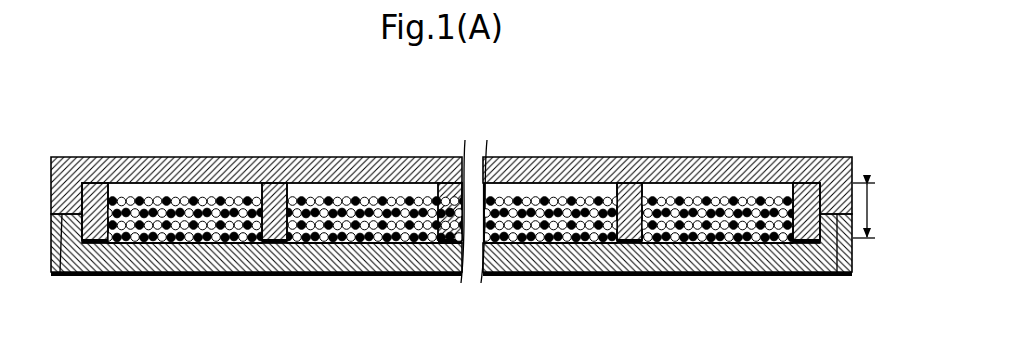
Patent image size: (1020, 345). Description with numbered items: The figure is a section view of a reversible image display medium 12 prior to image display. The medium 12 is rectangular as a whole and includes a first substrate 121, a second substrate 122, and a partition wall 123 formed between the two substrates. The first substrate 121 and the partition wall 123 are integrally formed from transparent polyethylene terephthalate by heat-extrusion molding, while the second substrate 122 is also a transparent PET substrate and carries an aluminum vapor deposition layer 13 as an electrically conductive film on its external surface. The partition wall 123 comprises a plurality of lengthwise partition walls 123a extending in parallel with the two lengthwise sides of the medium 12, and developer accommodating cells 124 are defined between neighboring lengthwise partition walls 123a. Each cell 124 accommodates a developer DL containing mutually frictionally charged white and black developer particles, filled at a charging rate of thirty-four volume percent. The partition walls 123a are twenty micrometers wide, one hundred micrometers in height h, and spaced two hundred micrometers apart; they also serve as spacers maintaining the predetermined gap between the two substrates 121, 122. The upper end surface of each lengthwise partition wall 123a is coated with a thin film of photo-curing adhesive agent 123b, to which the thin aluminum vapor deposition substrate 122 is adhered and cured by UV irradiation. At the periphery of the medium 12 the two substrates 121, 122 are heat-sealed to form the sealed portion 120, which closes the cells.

The reversible image display medium 12 is at (81, 72).
The aluminum vapor deposition layer 13 is at (211, 276).
The sealed portion 120 is at (60, 280).
The first substrate 121 is at (133, 156).
The second substrate 122 is at (136, 264).
The partition wall 123 is at (98, 197).
The lengthwise partition wall 123a is at (275, 197).
The photo-curing adhesive agent 123b is at (277, 246).
The developer accommodating cell 124 is at (180, 190).
The developer DL is at (217, 196).
The height of partition wall h is at (869, 210).